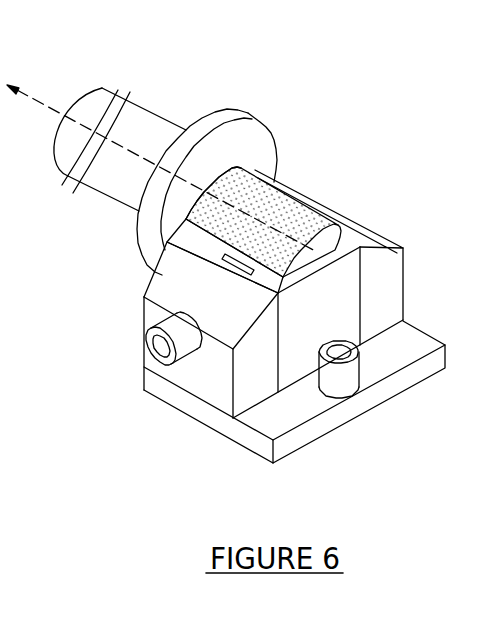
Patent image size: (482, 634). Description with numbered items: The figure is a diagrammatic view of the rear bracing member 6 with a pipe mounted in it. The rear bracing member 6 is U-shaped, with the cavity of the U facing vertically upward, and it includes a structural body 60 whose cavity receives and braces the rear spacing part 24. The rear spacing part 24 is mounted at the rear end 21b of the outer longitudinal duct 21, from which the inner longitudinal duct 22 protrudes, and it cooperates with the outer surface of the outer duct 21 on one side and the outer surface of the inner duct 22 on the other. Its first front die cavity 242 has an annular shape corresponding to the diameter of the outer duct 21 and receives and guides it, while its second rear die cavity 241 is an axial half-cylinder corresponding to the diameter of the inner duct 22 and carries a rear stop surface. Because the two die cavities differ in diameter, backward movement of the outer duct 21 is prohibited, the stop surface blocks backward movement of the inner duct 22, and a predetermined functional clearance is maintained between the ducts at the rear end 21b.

The rear bracing member 6 is at (297, 396).
The outer longitudinal duct 21 is at (238, 178).
The rear end of the outer longitudinal duct 21b is at (211, 203).
The inner longitudinal duct 22 is at (265, 222).
The rear spacing part 24 is at (443, 157).
The second rear die cavity 241 is at (322, 284).
The first front die cavity 242 is at (237, 155).
The structural body 60 is at (203, 390).